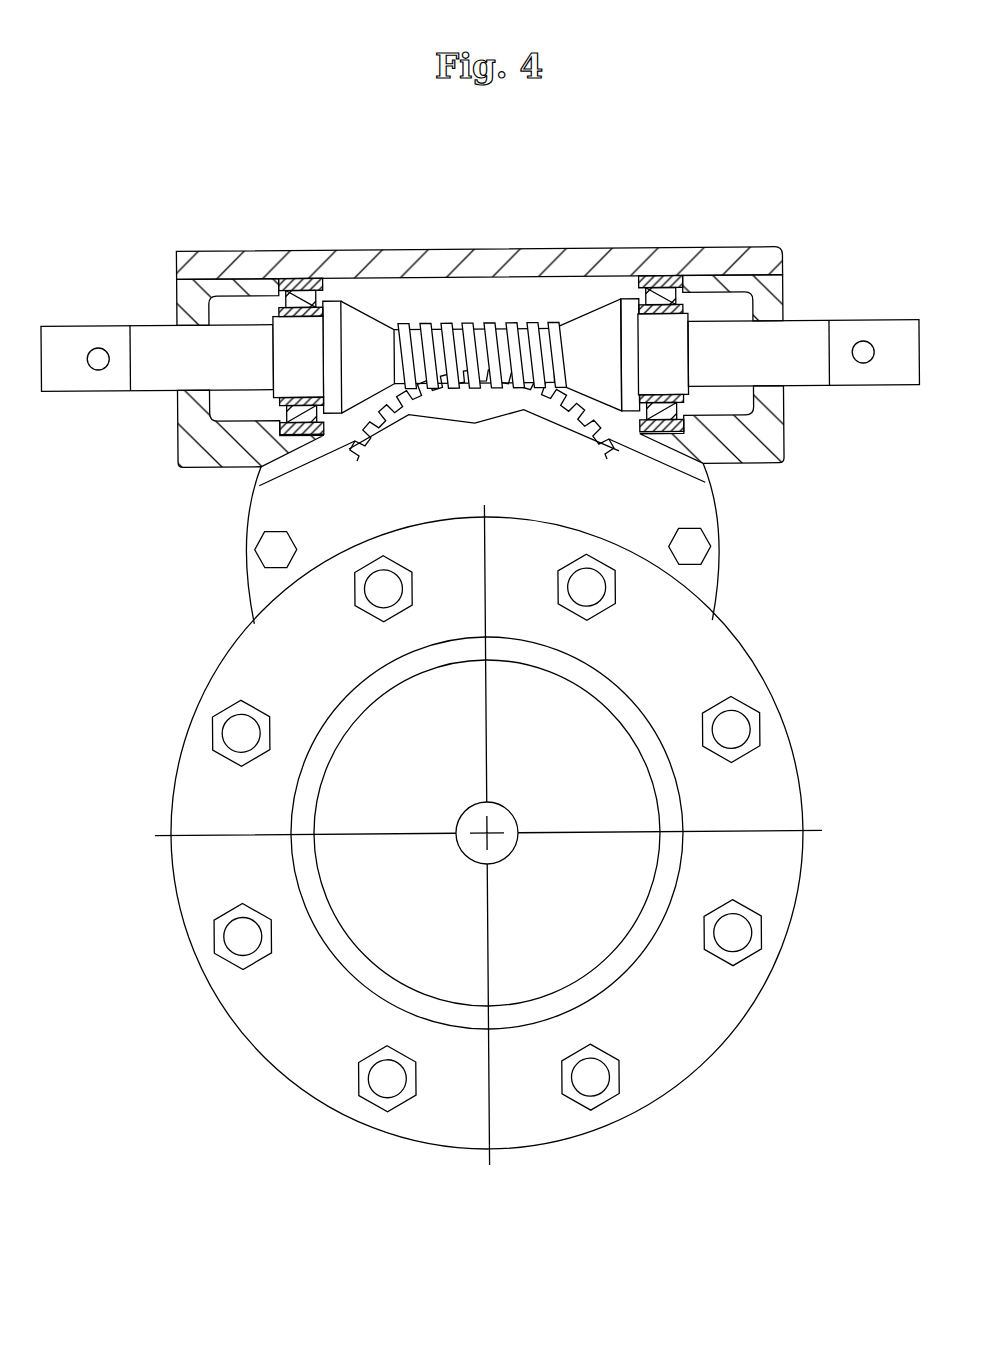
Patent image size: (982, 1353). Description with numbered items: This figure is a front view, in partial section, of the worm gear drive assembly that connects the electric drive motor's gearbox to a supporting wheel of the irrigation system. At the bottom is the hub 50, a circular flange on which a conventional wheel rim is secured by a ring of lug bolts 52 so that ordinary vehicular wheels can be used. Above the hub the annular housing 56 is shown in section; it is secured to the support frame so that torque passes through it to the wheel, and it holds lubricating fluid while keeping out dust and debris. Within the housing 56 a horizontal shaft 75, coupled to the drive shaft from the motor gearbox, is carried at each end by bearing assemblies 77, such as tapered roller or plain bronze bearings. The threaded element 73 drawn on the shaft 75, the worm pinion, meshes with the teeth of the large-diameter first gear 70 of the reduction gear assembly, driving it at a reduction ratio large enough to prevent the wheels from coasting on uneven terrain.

The hub 50 is at (711, 662).
The lug bolts 52 is at (727, 920).
The annular housing 56 is at (182, 252).
The first gear 70 is at (555, 414).
The worm 73 is at (455, 350).
The shaft 75 is at (815, 345).
The bearing assemblies 77 is at (328, 290).